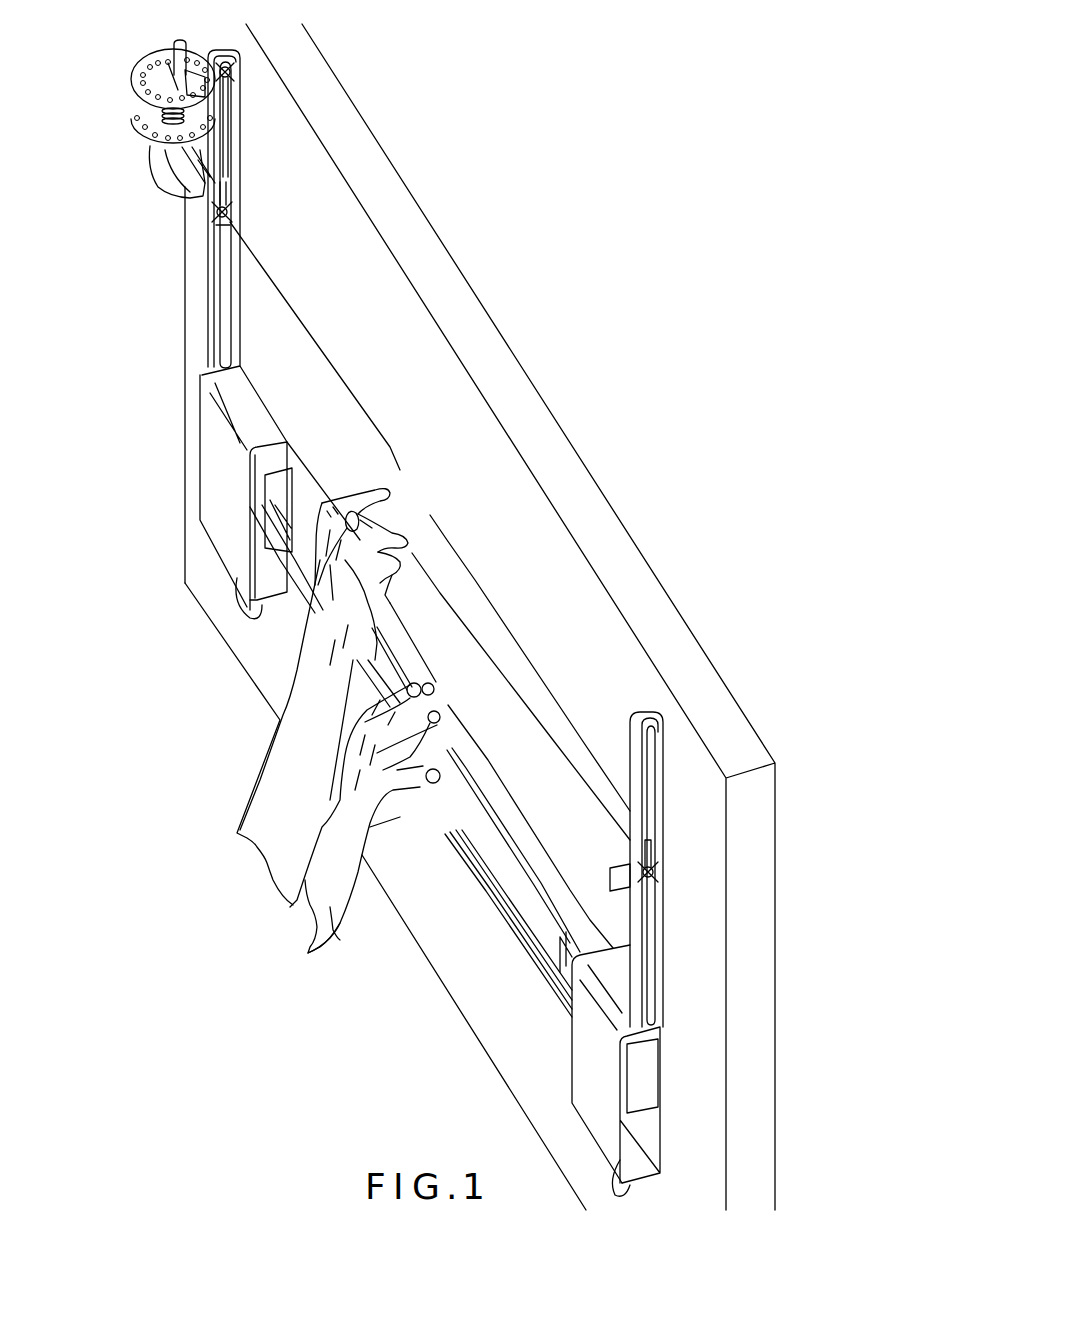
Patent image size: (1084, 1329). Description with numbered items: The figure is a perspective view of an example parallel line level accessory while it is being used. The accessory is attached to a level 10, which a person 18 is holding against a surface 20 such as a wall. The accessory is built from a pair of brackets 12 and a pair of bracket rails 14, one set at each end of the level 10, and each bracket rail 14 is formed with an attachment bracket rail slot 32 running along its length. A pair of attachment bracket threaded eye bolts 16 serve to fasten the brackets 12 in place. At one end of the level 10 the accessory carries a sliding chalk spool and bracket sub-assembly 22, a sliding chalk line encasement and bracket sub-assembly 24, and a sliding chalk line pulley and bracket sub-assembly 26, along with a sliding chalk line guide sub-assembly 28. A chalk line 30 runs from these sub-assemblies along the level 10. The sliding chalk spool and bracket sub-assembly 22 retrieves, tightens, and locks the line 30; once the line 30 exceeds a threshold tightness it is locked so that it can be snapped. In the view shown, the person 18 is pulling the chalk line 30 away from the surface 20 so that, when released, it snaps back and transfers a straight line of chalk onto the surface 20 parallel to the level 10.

The level 10 is at (497, 853).
The bracket 12 is at (208, 460).
The bracket rail 14 is at (212, 295).
The attachment bracket threaded eye bolt 16 is at (243, 607).
The person 18 is at (265, 785).
The surface 20 is at (678, 668).
The sliding chalk spool and bracket sub-assembly 22 is at (123, 46).
The sliding chalk line encasement and bracket sub-assembly 24 is at (158, 165).
The sliding chalk line pulley and bracket sub-assembly 26 is at (666, 861).
The sliding chalk line guide sub-assembly 28 is at (205, 222).
The chalk line 30 is at (400, 463).
The attachment bracket rail slot 32 is at (233, 330).